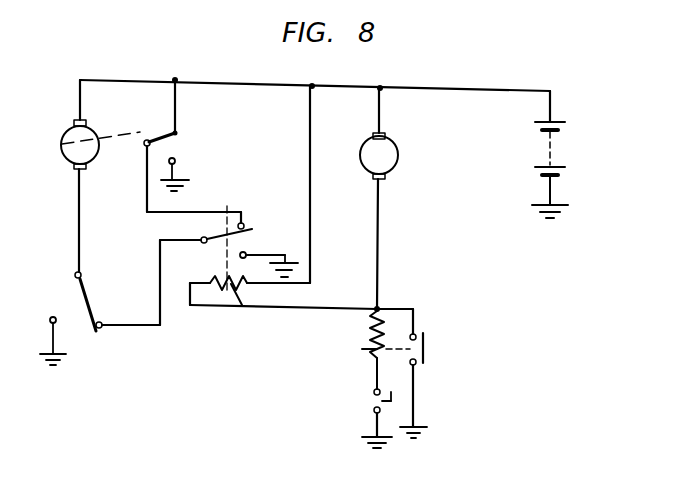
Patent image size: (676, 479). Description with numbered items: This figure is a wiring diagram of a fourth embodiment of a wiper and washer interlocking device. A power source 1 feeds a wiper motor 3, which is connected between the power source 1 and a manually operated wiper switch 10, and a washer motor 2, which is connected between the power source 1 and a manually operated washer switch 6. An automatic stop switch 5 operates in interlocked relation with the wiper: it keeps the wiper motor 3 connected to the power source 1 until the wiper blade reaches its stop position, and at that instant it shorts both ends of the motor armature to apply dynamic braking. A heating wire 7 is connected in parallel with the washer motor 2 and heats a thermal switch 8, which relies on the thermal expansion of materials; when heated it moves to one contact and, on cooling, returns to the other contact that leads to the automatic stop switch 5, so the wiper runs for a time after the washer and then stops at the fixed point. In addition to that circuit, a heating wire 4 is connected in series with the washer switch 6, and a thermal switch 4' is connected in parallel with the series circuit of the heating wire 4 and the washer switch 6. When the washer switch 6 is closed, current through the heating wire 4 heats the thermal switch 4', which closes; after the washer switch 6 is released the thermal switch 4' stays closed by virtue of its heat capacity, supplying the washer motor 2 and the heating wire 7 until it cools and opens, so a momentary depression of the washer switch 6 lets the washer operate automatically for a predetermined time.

The power source 1 is at (552, 160).
The washer motor 2 is at (364, 149).
The wiper motor 3 is at (64, 138).
The heating wire 4 is at (370, 350).
The thermal switch 4' is at (428, 373).
The automatic stop switch 5 is at (161, 137).
The washer switch 6 is at (380, 408).
The heating wire 7 is at (242, 308).
The thermal switch 8 is at (226, 238).
The wiper switch 10 is at (83, 302).